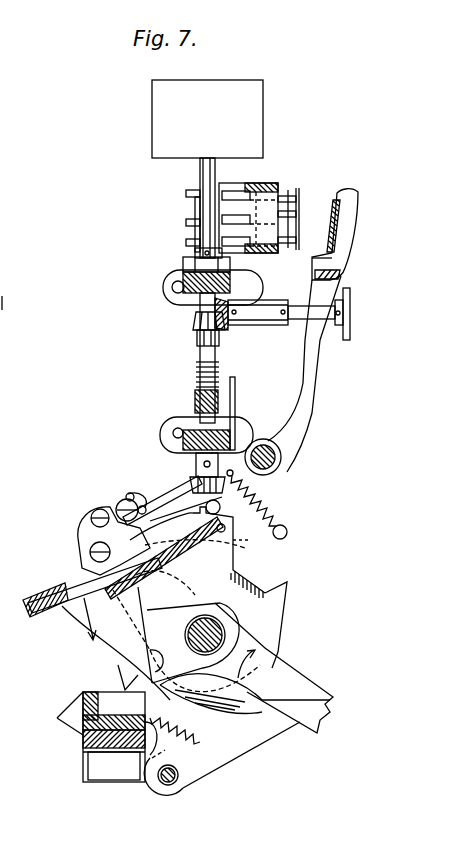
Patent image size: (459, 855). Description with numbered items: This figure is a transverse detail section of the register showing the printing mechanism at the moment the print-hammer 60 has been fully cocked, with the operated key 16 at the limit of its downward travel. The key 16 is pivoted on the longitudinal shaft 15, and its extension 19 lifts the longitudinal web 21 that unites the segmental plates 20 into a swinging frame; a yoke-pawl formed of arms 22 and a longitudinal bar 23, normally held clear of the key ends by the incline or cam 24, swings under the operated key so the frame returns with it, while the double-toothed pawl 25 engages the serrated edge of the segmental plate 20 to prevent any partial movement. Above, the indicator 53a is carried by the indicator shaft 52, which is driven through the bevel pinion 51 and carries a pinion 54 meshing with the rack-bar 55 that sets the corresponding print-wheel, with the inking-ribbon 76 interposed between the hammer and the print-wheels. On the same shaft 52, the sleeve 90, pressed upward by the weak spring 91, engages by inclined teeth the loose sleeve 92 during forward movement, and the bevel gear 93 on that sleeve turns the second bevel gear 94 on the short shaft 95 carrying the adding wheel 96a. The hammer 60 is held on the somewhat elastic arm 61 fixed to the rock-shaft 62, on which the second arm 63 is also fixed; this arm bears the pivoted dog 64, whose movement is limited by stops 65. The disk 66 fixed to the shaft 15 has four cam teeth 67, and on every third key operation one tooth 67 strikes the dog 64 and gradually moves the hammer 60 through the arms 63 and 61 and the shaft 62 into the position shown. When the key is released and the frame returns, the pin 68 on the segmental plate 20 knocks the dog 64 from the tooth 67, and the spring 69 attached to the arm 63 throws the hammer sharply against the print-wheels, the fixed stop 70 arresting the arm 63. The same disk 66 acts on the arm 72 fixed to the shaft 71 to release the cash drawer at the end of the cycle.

The indicator 53a is at (207, 119).
The indicator shaft 52 is at (200, 176).
The pinion 54 is at (186, 194).
The rack-bar 55 is at (232, 196).
The inking-ribbon 76 is at (299, 194).
The print-hammer 60 is at (344, 236).
The arm 61 is at (313, 378).
The rock-shaft 62 is at (281, 457).
The sleeve 90 is at (200, 372).
The weak spring 91 is at (195, 395).
The sleeve 92 is at (197, 340).
The bevel gear 93 is at (196, 322).
The second bevel gear 94 is at (225, 325).
The short shaft 95 is at (300, 312).
The adding wheel 96a is at (356, 311).
The bevel pinion 51 is at (196, 480).
The stops 65 is at (154, 504).
The second arm 63 is at (175, 489).
The spring 69 is at (272, 508).
The fixed stop 70 is at (220, 507).
The pin 68 is at (225, 528).
The dog 64 is at (180, 532).
The segmental plate 20 is at (236, 562).
The cam teeth 67 is at (287, 585).
The disk 66 is at (268, 637).
The key 16 is at (241, 695).
The shaft 15 is at (200, 632).
The longitudinal web 21 is at (170, 576).
The double-toothed pawl 25 is at (88, 556).
The arms 22 is at (92, 592).
The longitudinal bar 23 is at (58, 603).
The extension 19 is at (86, 620).
The incline or cam 24 is at (76, 712).
The arm 72 is at (205, 740).
The shaft 71 is at (174, 782).